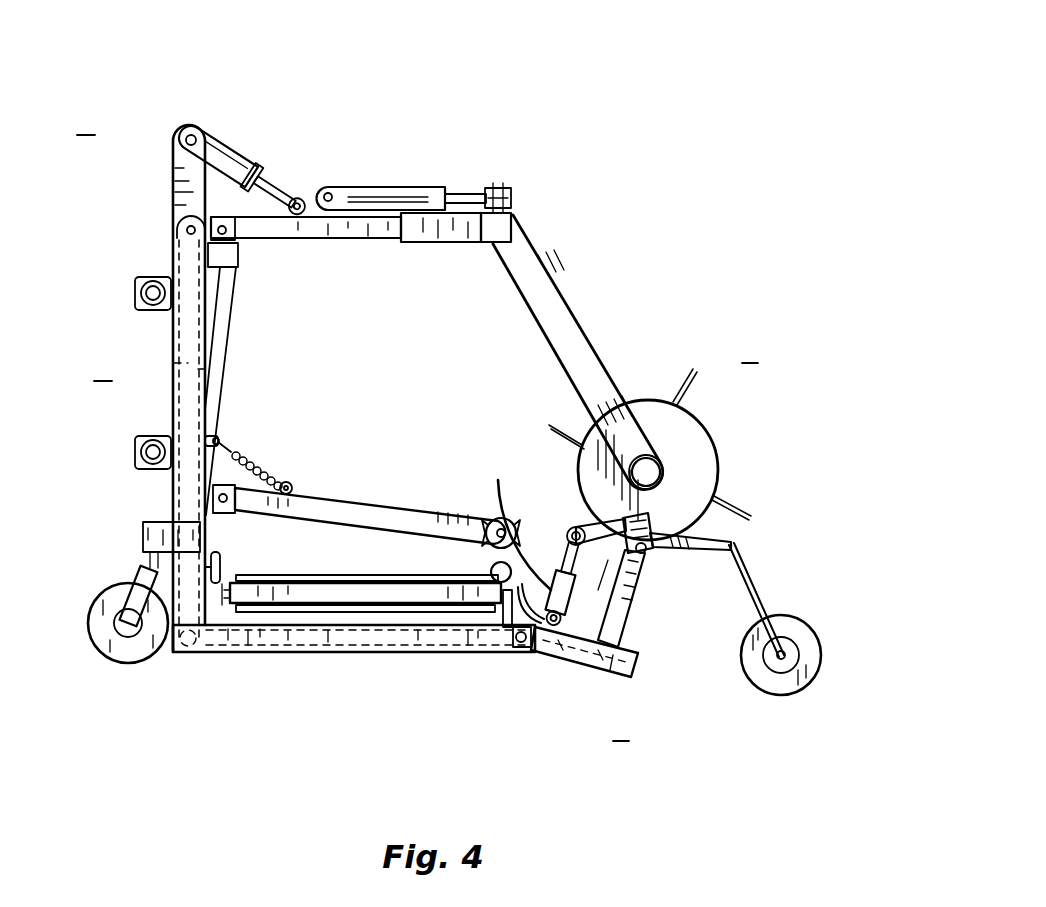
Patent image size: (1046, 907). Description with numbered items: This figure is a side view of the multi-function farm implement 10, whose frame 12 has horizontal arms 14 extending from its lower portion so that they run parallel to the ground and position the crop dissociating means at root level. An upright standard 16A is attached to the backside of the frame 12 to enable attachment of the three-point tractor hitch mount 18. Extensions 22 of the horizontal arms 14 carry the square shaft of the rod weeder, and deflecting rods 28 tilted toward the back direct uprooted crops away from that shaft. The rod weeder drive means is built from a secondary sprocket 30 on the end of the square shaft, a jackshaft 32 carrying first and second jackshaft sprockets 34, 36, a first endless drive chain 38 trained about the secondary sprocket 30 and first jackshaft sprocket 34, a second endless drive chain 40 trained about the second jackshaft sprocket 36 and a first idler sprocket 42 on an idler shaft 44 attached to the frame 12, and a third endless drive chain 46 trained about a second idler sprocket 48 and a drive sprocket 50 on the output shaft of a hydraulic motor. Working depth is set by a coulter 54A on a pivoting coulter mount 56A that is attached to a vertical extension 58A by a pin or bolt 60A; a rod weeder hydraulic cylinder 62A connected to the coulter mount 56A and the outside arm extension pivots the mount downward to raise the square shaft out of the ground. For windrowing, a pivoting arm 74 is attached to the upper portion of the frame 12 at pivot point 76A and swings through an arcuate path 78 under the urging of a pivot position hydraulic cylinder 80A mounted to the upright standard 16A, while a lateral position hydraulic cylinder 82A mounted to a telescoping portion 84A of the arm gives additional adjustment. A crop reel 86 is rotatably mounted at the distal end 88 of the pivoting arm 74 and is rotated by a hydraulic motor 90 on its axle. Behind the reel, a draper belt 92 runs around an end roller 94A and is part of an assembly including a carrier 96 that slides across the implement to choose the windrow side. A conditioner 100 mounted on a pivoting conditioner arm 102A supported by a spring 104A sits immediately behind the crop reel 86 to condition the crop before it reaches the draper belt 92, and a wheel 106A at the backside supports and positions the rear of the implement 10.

The multi-function farm implement 10 is at (512, 131).
The frame 12 is at (175, 253).
The horizontal arms 14 is at (255, 653).
The upright standard 16A is at (252, 356).
The three-point tractor hitch mount 18 is at (137, 280).
The extensions of the horizontal arms 22 is at (557, 653).
The deflecting rods 28 is at (548, 545).
The secondary sprocket 30 is at (620, 683).
The jackshaft 32 is at (520, 653).
The first jackshaft sprocket 34 is at (502, 655).
The second jackshaft sprocket 36 is at (470, 655).
The first endless drive chain 38 is at (580, 673).
The second endless drive chain 40 is at (307, 657).
The first idler sprocket 42 is at (170, 657).
The idler shaft 44 is at (193, 657).
The third endless drive chain 46 is at (175, 412).
The second idler sprocket 48 is at (217, 653).
The drive sprocket 50 is at (217, 152).
The coulter 54A is at (822, 642).
The pivoting coulter mount 56A is at (745, 565).
The vertical extension 58A is at (660, 640).
The pin or bolt 60A is at (733, 543).
The rod weeder hydraulic cylinder 62A is at (640, 600).
The pivoting arm 74 is at (535, 222).
The pivot point 76A is at (235, 240).
The arcuate path 78 is at (381, 124).
The pivot position hydraulic cylinder 80A is at (233, 150).
The lateral position hydraulic cylinder 82A is at (430, 186).
The telescoping portion 84A is at (405, 233).
The crop reel 86 is at (720, 455).
The distal end of pivoting arm 88 is at (717, 492).
The hydraulic motor 90 is at (665, 447).
The draper belt 92 is at (400, 607).
The end roller 94A is at (235, 573).
The carrier 96 is at (290, 488).
The conditioner 100 is at (503, 517).
The pivoting conditioner arm 102A is at (380, 490).
The spring 104A is at (258, 450).
The wheel 106A is at (100, 663).